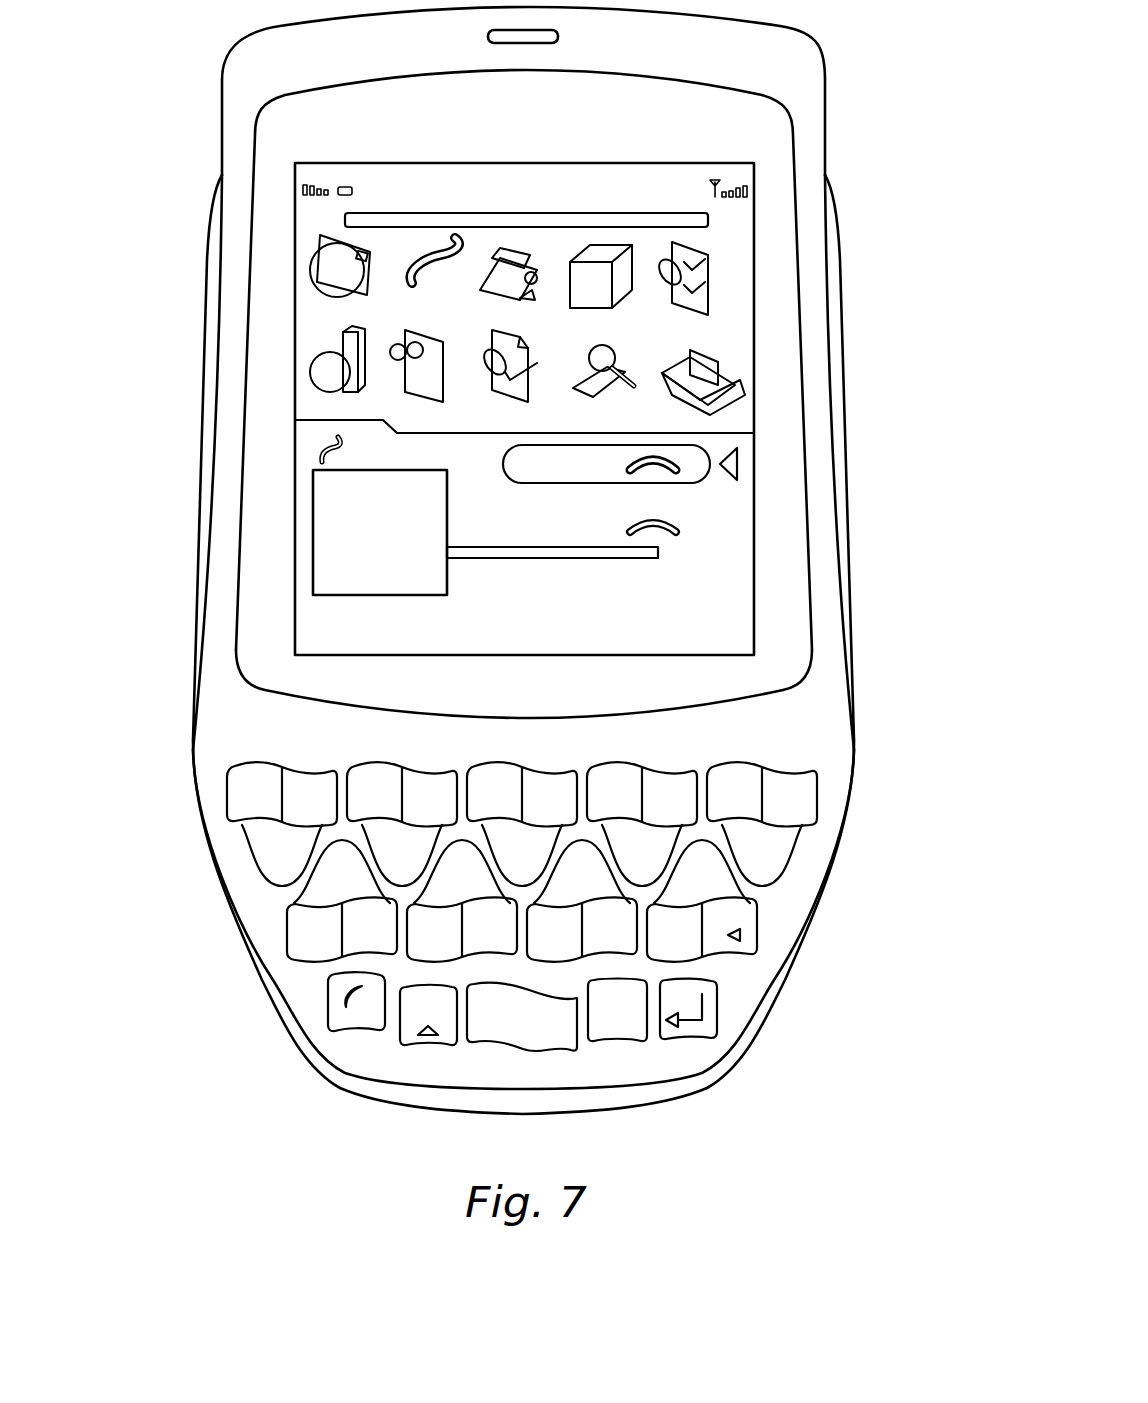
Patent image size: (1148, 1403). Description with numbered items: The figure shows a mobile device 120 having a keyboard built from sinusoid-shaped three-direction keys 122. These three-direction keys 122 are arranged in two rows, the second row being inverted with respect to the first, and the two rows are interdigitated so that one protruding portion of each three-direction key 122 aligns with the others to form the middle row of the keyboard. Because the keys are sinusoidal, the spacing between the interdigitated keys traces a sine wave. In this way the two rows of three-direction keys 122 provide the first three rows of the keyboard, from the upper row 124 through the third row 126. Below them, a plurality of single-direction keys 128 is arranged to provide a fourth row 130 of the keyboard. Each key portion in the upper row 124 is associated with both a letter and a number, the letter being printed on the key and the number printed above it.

The mobile device 120 is at (182, 133).
The three-direction keys 122 is at (511, 912).
The first row of the keyboard 124 is at (224, 789).
The third row of the keyboard 126 is at (248, 861).
The single-direction keys 128 is at (276, 933).
The fourth row of the keyboard 130 is at (314, 1005).